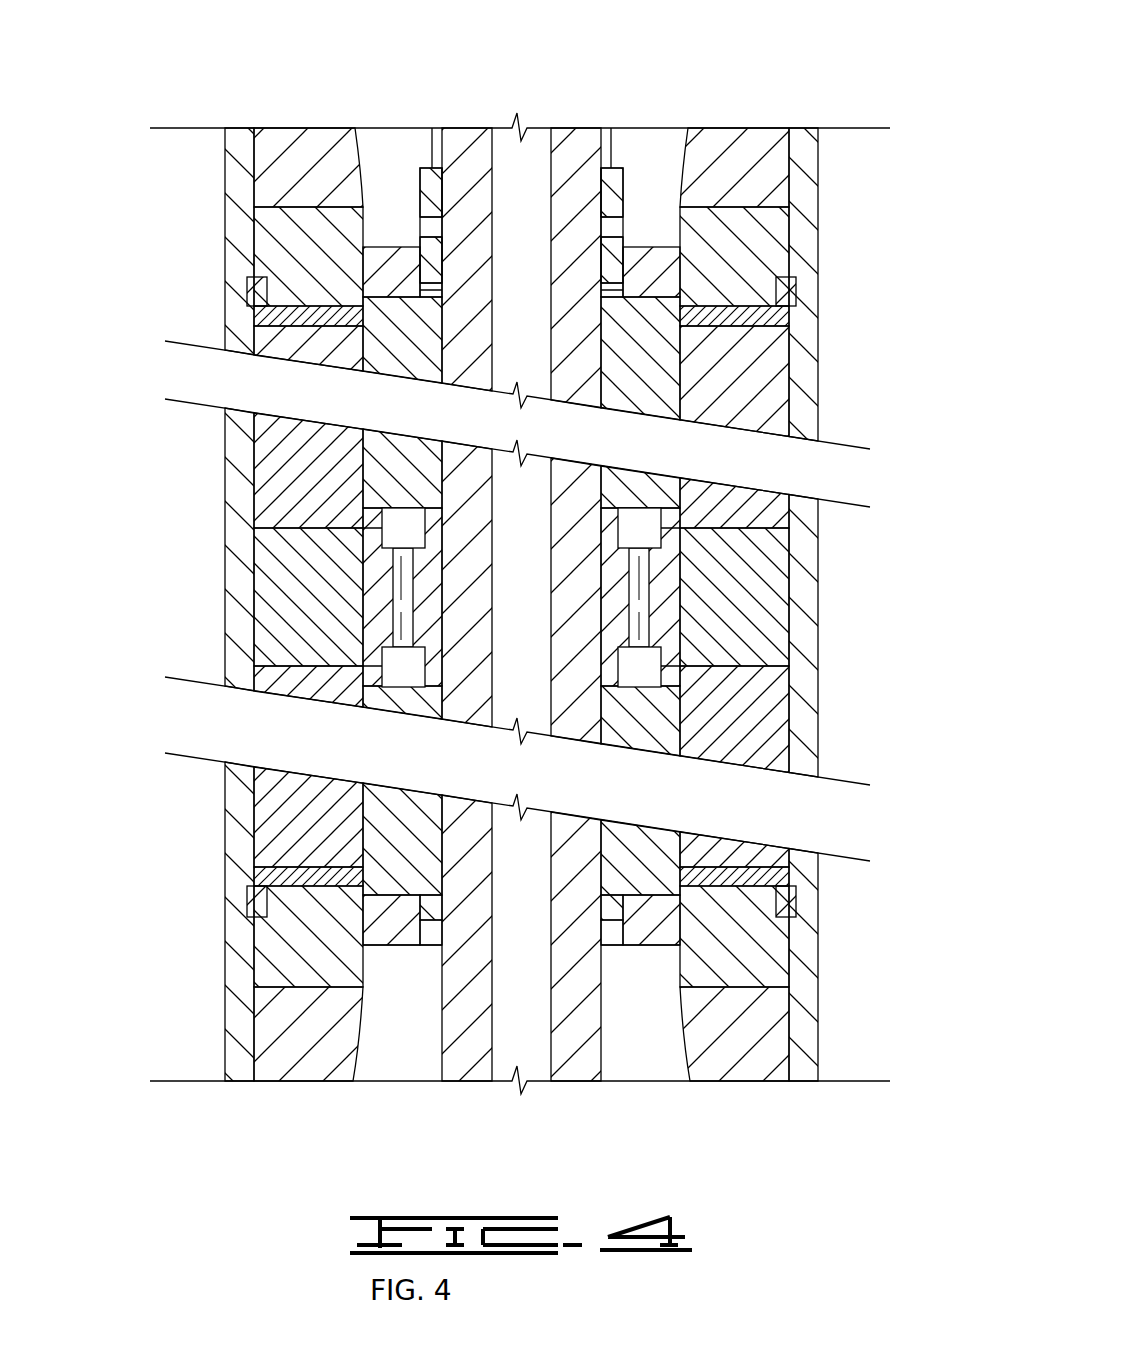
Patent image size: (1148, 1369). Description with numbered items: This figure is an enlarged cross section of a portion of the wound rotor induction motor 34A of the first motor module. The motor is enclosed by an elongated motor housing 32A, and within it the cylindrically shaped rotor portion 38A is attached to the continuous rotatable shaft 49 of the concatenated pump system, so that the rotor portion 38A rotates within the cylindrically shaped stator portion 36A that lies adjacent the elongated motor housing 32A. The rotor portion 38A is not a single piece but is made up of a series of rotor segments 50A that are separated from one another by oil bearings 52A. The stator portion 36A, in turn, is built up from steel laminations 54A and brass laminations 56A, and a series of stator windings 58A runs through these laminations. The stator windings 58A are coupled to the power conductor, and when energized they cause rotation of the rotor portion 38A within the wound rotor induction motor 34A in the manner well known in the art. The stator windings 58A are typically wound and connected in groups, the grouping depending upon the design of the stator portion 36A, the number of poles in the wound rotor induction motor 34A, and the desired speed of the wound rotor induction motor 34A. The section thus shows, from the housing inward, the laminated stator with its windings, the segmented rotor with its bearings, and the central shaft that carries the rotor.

The wound rotor induction motor 34A is at (684, 84).
The continuous rotatable shaft 49 is at (462, 126).
The stator windings 58A is at (290, 246).
The stator portion 36A is at (808, 330).
The elongated motor housing 32A is at (580, 385).
The rotor segments 50A is at (385, 468).
The steel laminations 54A is at (283, 506).
The brass laminations 56A is at (303, 600).
The oil bearings 52A is at (642, 598).
The rotor portion 38A is at (398, 997).